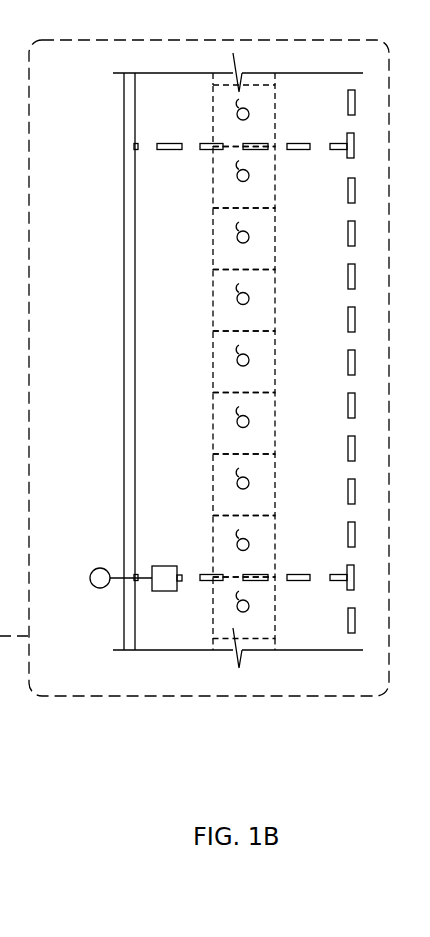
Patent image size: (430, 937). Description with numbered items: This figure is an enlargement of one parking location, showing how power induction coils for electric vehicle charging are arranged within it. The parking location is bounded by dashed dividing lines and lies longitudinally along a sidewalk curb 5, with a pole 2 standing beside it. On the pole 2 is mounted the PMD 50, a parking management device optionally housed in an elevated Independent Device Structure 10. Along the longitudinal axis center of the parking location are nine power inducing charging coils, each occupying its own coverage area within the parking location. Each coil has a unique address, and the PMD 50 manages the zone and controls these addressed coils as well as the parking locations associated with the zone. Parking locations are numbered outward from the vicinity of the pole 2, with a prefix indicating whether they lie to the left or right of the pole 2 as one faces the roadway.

The pole 2 is at (100, 567).
The sidewalk curb 5 is at (127, 405).
The Independent Device Structure 10 is at (114, 599).
The PMD 50 is at (152, 590).